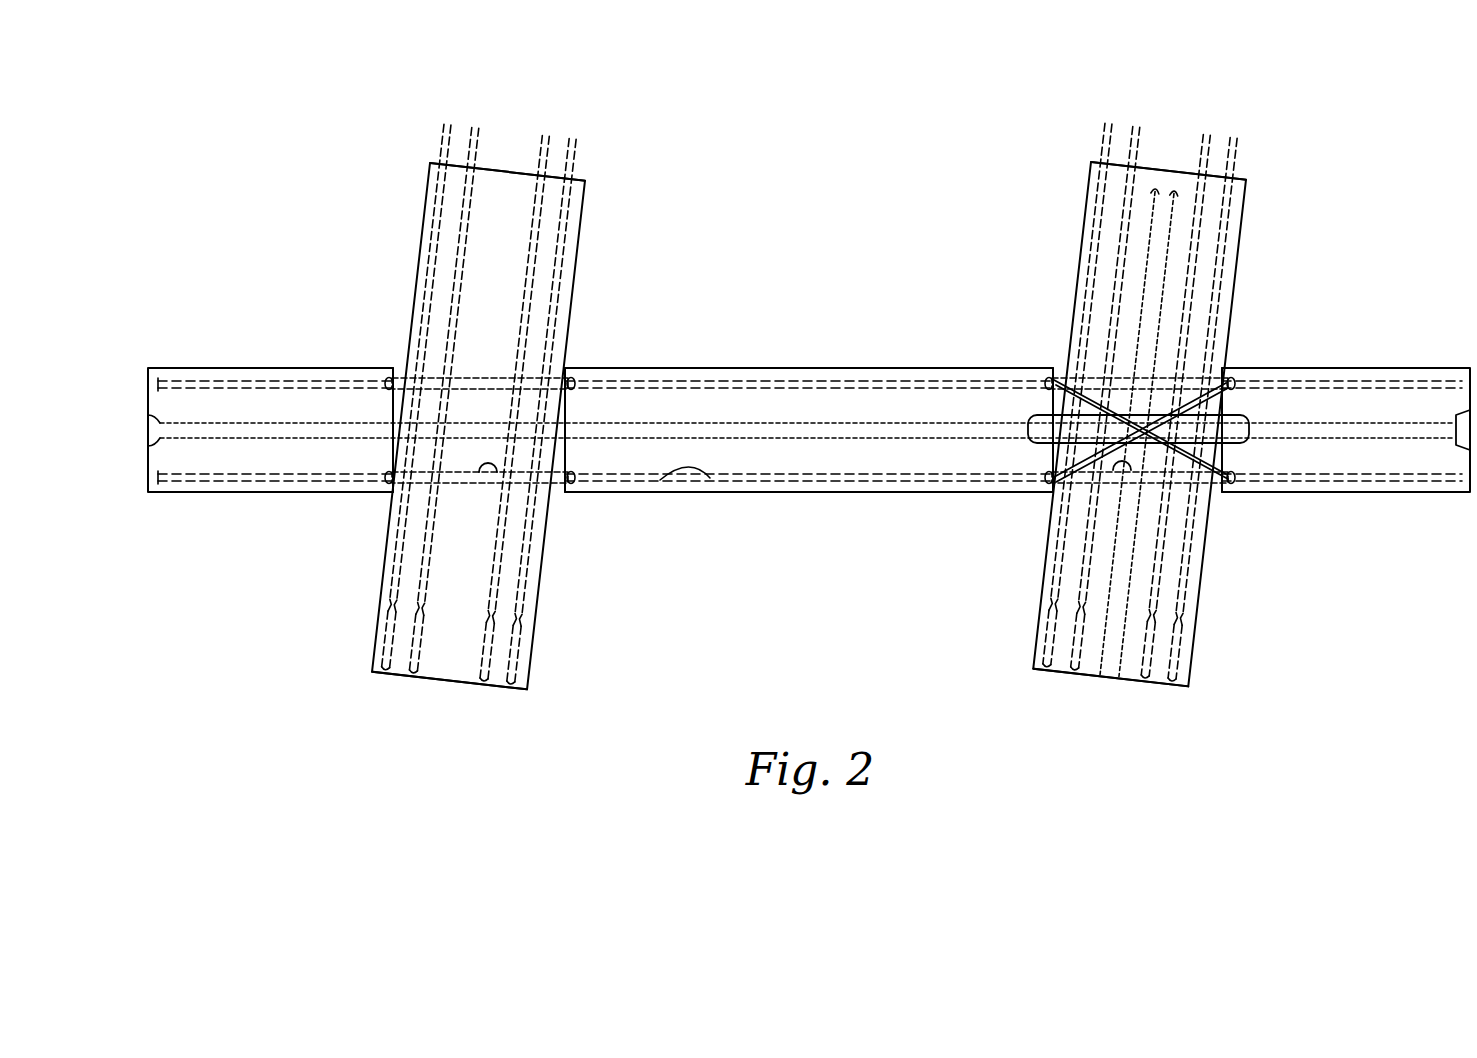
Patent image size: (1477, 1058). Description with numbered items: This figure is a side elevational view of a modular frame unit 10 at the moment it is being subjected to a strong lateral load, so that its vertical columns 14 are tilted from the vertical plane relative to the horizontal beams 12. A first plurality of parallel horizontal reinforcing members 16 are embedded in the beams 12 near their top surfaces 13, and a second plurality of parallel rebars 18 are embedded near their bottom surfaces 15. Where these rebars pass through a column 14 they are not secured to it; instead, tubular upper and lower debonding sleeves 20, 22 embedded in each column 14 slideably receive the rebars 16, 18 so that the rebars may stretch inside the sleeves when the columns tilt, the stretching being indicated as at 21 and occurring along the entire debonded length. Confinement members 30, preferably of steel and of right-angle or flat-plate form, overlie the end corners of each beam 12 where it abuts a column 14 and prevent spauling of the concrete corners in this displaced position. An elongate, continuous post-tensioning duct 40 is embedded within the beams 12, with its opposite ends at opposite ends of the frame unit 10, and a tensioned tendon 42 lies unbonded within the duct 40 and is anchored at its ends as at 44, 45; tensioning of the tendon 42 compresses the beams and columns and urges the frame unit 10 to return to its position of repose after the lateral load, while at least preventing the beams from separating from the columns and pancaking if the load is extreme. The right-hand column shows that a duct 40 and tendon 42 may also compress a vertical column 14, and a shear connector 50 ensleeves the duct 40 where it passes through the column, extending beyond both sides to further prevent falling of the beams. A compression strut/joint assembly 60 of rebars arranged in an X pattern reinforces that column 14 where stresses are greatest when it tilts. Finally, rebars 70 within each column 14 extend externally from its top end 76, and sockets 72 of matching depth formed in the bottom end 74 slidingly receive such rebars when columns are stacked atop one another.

The frame unit 10 is at (1312, 128).
The horizontal beams 12 is at (329, 368).
The top surfaces 13 is at (905, 368).
The vertical columns 14 is at (421, 248).
The bottom surfaces 15 is at (905, 493).
The reinforcing members 16 is at (330, 393).
The rebars 18 is at (682, 468).
The upper debonding sleeves 20 is at (478, 377).
The rebar stretch location 21 is at (397, 378).
The lower debonding sleeves 22 is at (497, 472).
The confinement members 30 is at (392, 378).
The post-tensioning duct 40 is at (726, 423).
The tendon 42 is at (936, 421).
The anchor 44 is at (148, 432).
The anchor 45 is at (1472, 416).
The shear connector 50 is at (1041, 418).
The compression strut/joint assembly 60 is at (1173, 372).
The rebars 70 is at (472, 216).
The sockets 72 is at (380, 676).
The bottom end 74 is at (531, 634).
The top end 76 is at (429, 178).